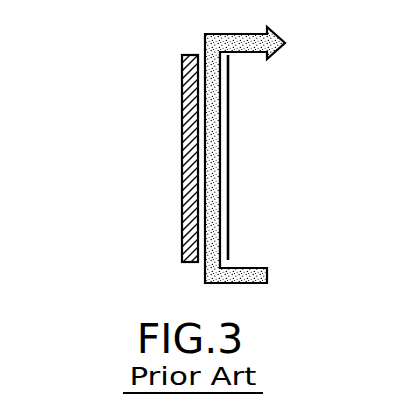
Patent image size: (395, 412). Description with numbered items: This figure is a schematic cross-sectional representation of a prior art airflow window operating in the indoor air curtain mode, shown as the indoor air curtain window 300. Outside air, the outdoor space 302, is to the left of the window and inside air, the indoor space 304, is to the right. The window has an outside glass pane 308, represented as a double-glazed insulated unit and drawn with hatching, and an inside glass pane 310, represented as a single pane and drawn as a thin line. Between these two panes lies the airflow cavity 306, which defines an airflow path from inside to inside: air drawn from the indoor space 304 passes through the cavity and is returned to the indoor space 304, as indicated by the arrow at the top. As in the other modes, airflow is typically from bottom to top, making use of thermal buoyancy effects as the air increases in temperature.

The indoor air curtain window 300 is at (147, 70).
The outdoor space 302 is at (114, 146).
The indoor space 304 is at (311, 220).
The airflow cavity 306 is at (223, 132).
The outside glass pane 308 is at (182, 188).
The inside glass pane 310 is at (228, 180).